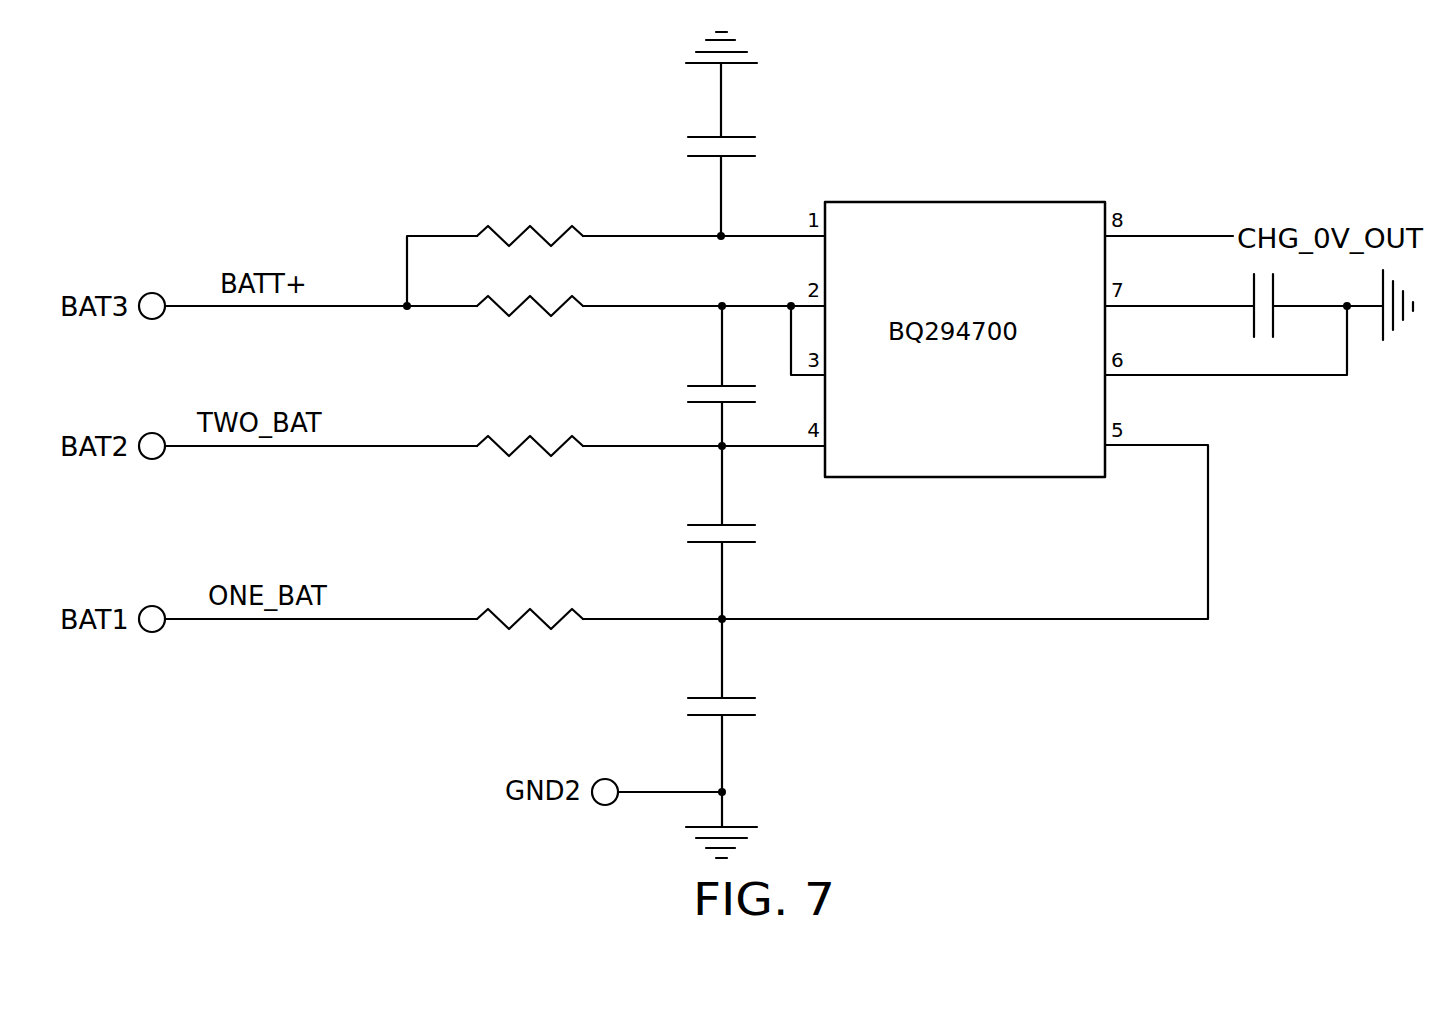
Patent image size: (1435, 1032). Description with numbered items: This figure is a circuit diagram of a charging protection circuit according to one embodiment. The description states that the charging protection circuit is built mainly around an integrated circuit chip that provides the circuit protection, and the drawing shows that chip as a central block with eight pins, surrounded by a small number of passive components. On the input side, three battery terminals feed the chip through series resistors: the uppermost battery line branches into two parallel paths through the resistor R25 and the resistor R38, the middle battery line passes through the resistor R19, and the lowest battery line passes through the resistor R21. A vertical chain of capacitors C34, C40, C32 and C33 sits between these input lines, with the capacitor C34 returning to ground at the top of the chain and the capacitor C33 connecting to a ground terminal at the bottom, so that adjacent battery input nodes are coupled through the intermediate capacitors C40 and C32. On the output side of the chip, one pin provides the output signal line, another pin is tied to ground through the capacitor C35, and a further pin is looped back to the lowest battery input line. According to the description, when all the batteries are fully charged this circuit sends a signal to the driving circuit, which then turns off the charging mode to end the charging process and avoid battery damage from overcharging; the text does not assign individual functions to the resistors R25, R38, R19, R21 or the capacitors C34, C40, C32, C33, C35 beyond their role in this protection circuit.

The capacitor C34 is at (749, 185).
The resistor R25 is at (530, 251).
The resistor R38 is at (530, 324).
The capacitor C40 is at (749, 394).
The resistor R19 is at (530, 461).
The capacitor C32 is at (749, 536).
The resistor R21 is at (530, 636).
The capacitor C33 is at (749, 709).
The capacitor C35 is at (1263, 321).